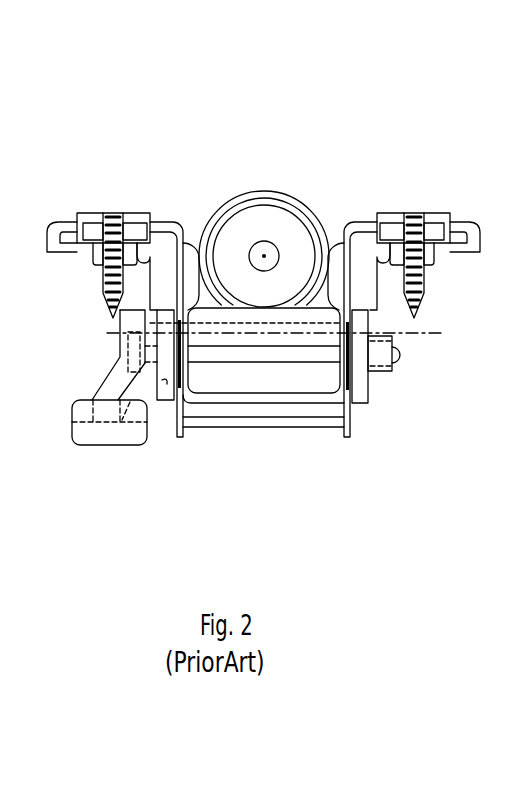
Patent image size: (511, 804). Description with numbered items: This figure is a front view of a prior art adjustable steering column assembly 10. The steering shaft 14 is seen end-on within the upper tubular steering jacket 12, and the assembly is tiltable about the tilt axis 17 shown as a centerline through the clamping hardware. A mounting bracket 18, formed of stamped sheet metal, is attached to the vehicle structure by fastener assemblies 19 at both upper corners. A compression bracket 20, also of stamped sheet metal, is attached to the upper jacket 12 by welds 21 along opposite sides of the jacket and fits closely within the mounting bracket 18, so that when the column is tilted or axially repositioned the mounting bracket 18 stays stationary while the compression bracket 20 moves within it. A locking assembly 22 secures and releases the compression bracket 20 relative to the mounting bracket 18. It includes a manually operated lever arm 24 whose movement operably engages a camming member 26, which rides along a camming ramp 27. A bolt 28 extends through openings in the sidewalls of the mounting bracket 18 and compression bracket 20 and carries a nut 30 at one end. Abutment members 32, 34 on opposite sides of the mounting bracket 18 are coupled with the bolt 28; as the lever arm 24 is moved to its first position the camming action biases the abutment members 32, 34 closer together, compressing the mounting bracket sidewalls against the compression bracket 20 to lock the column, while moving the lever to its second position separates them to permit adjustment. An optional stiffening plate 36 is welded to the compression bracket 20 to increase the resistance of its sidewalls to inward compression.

The adjustable steering column assembly 10 is at (441, 127).
The upper tubular steering jacket 12 is at (296, 200).
The steering shaft 14 is at (264, 241).
The tilt axis 17 is at (423, 335).
The mounting bracket 18 is at (181, 235).
The fastener assemblies 19 is at (90, 215).
The compression bracket 20 is at (245, 403).
The welds 21 is at (195, 247).
The locking assembly 22 is at (104, 358).
The lever arm 24 is at (100, 446).
The camming member 26 is at (148, 401).
The camming ramp 27 is at (166, 383).
The bolt 28 is at (277, 357).
The nut 30 is at (382, 375).
The abutment member 32 is at (360, 402).
The abutment member 34 is at (128, 332).
The stiffening plate 36 is at (312, 326).